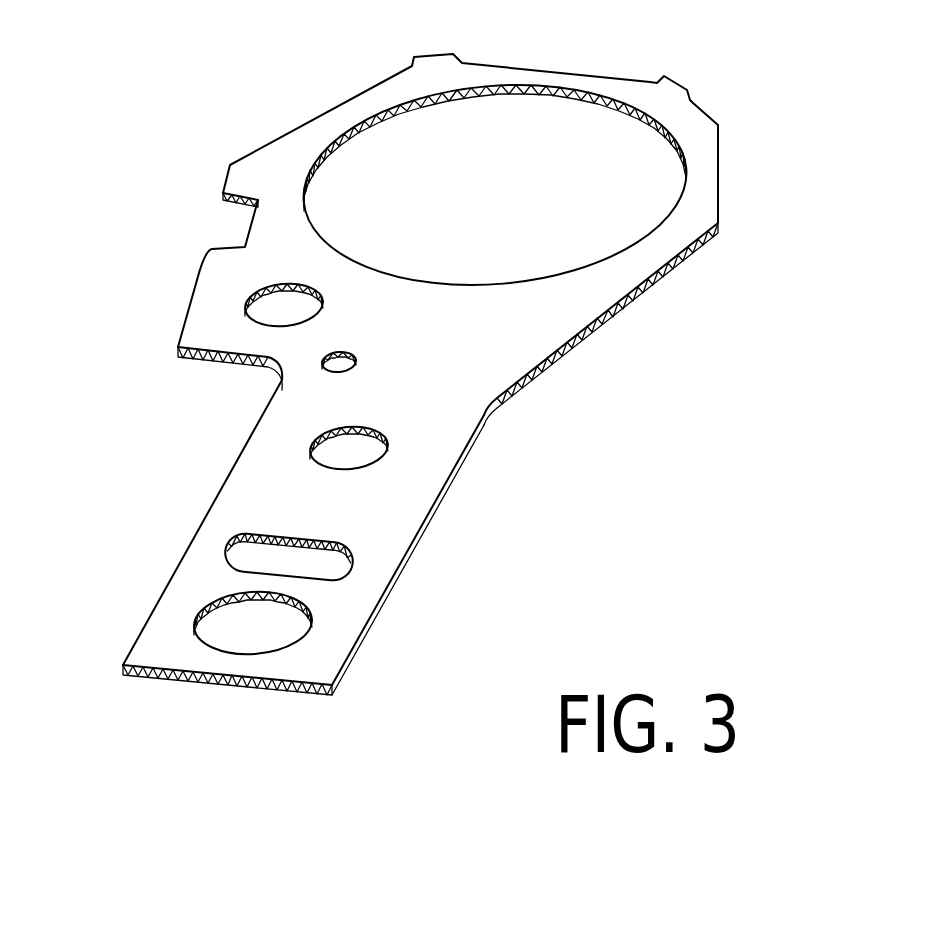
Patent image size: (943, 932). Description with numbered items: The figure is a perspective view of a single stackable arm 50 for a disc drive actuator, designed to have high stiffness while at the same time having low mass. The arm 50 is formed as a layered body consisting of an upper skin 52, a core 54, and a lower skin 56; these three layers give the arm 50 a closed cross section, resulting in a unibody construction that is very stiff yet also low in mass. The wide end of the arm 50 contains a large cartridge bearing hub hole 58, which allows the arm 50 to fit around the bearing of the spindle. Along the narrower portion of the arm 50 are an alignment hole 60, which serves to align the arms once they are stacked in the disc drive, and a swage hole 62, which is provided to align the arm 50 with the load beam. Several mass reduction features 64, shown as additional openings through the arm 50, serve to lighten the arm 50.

The stackable arm 50 is at (712, 270).
The upper skin 52 is at (332, 655).
The core 54 is at (183, 686).
The lower skin 56 is at (292, 693).
The cartridge bearing hub hole 58 is at (556, 118).
The alignment hole 60 is at (292, 306).
The swage hole 62 is at (257, 623).
The mass reduction features 64 is at (339, 360).